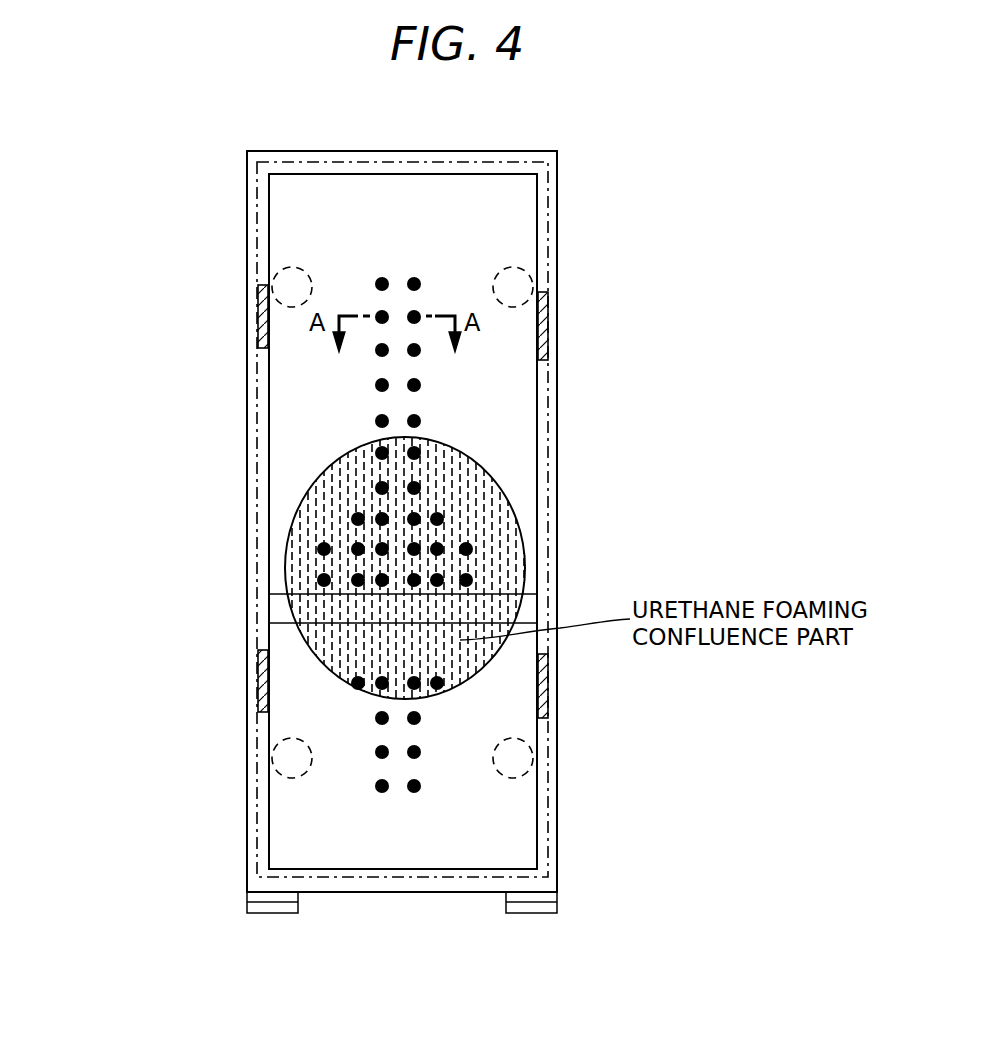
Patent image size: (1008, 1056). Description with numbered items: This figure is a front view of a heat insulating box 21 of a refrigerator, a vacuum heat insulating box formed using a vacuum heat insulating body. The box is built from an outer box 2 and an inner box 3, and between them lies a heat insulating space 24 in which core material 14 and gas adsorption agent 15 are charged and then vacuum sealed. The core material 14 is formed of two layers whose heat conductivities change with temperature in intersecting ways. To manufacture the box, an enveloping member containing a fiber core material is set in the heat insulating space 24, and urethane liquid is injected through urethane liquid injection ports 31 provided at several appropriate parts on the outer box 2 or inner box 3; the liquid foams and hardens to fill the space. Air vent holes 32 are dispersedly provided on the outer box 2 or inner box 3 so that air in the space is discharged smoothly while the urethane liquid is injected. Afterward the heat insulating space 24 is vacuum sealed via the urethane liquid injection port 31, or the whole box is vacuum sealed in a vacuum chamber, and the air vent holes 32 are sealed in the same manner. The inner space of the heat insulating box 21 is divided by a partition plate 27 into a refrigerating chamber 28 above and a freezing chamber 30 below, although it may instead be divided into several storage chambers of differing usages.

The heat insulating box 21 is at (548, 142).
The outer box 2 is at (247, 343).
The inner box 3 is at (268, 468).
The heat insulating space 24 is at (258, 410).
The core material 14 is at (257, 213).
The gas adsorption agent 15 is at (263, 313).
The partition plate 27 is at (280, 615).
The refrigerating chamber 28 is at (412, 236).
The freezing chamber 30 is at (412, 841).
The urethane liquid injection port 31 is at (282, 283).
The air vent hole 32 is at (414, 385).